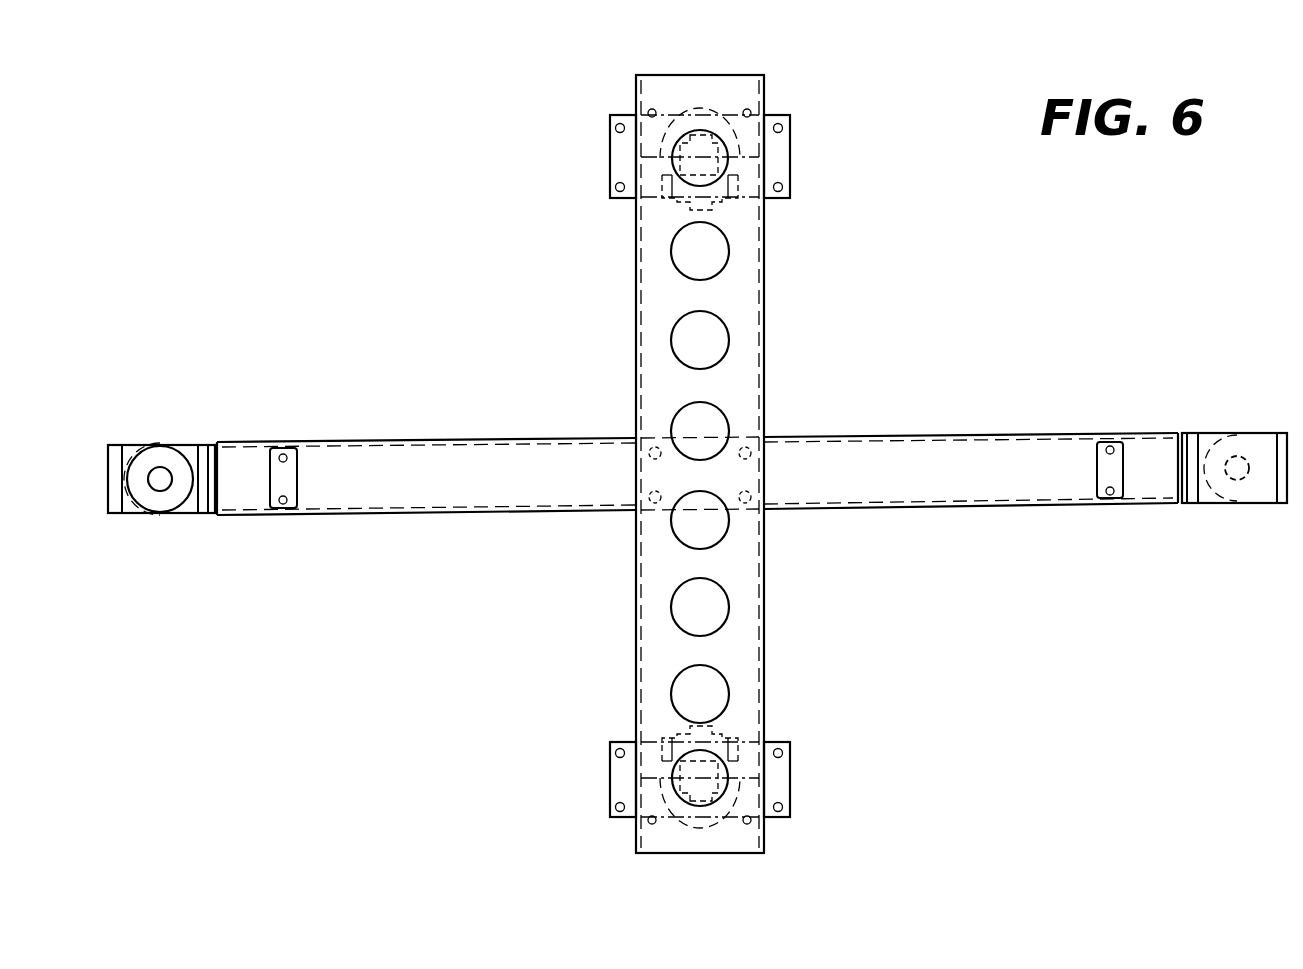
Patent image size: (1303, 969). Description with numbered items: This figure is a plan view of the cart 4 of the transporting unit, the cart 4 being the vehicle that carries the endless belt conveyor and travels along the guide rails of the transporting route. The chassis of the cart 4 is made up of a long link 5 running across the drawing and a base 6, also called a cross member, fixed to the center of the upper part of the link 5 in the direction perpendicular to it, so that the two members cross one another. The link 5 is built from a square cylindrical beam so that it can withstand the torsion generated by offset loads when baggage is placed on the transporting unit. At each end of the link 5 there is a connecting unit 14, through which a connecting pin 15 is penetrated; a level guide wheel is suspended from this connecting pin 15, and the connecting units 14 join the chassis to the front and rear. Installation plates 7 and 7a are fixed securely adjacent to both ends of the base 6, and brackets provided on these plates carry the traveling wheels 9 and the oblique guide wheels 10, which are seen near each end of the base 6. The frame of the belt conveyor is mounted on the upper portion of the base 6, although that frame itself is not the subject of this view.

The cart 4 is at (1047, 408).
The link 5 is at (443, 442).
The base 6 is at (767, 298).
The installation plate 7 is at (790, 783).
The upper mounting bracket 7a is at (790, 155).
The traveling wheel 9 is at (660, 200).
The oblique guide wheel 10 is at (690, 113).
The connecting unit 14 is at (175, 425).
The connecting pin 15 is at (162, 482).